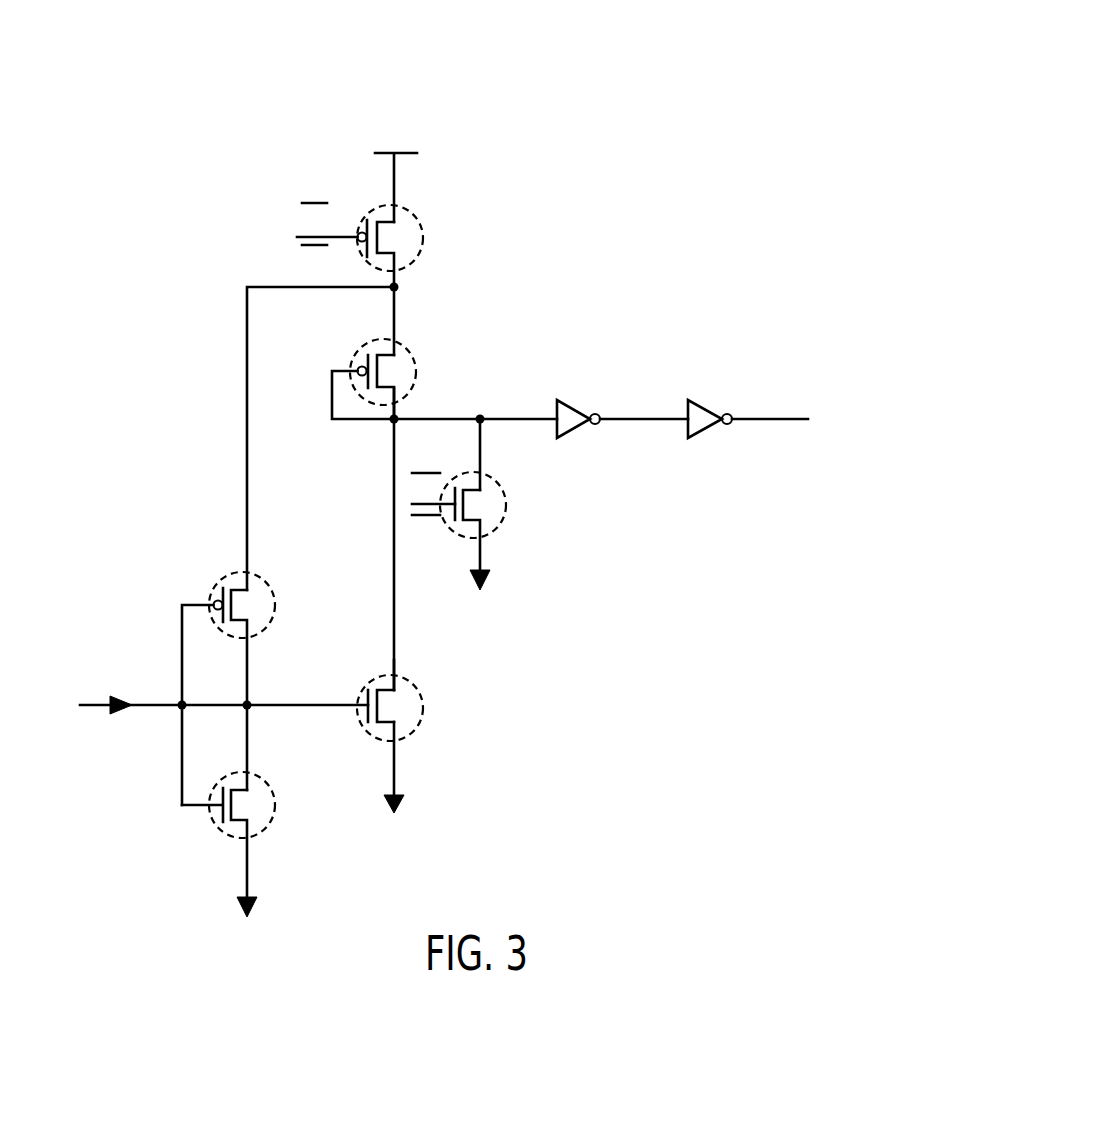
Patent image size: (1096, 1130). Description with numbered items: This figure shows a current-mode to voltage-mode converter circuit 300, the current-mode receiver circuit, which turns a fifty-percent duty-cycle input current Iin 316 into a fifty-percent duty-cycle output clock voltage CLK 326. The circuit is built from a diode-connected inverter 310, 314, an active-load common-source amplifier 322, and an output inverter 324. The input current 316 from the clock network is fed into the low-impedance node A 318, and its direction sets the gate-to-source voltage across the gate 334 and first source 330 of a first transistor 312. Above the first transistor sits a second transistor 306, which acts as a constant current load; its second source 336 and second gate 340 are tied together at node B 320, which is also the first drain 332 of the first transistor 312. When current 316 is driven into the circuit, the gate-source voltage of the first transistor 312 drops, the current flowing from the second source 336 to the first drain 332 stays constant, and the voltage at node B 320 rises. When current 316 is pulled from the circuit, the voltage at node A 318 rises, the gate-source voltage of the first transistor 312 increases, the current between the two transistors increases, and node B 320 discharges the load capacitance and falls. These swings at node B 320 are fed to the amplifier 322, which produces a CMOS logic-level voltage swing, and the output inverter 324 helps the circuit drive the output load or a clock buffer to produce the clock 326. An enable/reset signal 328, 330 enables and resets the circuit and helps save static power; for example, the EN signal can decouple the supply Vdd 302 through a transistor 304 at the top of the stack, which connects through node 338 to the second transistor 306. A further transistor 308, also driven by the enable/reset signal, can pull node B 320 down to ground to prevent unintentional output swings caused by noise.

The CM to VM converter circuit 300 is at (662, 44).
The Vdd 302 is at (417, 140).
The PMOS enable transistor 304 is at (362, 244).
The second transistor 306 is at (390, 376).
The transistor 308 is at (505, 495).
The diode-connected inverter 310 is at (272, 588).
The first transistor 312 is at (397, 630).
The diode-connected inverter 314 is at (272, 790).
The input current Iin 316 is at (97, 747).
The node A 318 is at (250, 702).
The node B 320 is at (392, 421).
The active-load common-source amplifier 322 is at (575, 405).
The output inverter 324 is at (705, 405).
The output voltage CLK 326 is at (832, 393).
The enable/reset signal 328 is at (295, 228).
The first source 330 is at (395, 725).
The first drain 332 is at (388, 690).
The gate 334 is at (365, 714).
The second source 336 is at (392, 388).
The node between 304 and 306 338 is at (390, 343).
The second gate 340 is at (355, 368).